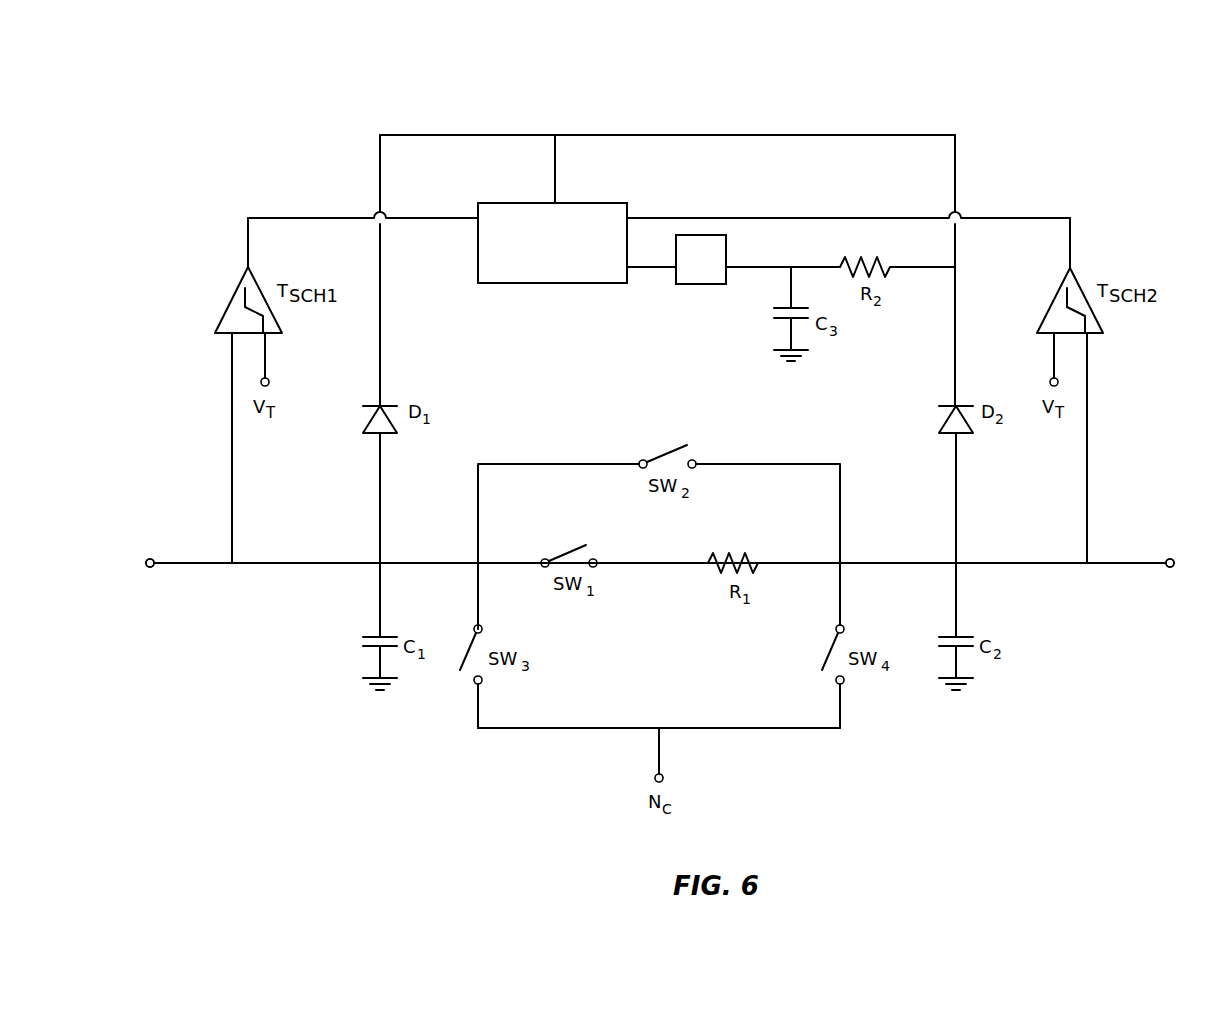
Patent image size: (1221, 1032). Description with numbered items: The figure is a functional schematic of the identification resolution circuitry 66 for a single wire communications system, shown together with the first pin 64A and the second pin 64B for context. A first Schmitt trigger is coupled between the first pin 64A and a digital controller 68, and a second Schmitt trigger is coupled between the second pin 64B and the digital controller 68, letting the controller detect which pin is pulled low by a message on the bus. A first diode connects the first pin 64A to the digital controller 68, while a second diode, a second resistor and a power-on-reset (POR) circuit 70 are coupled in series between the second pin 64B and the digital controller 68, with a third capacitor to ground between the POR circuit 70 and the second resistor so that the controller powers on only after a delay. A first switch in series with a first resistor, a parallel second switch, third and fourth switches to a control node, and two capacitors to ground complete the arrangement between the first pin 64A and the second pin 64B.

The identification resolution circuitry 66 is at (895, 88).
The digital controller 68 is at (541, 256).
The power-on-reset (POR) circuit 70 is at (688, 271).
The first pin 64A is at (150, 568).
The second pin 64B is at (1170, 568).